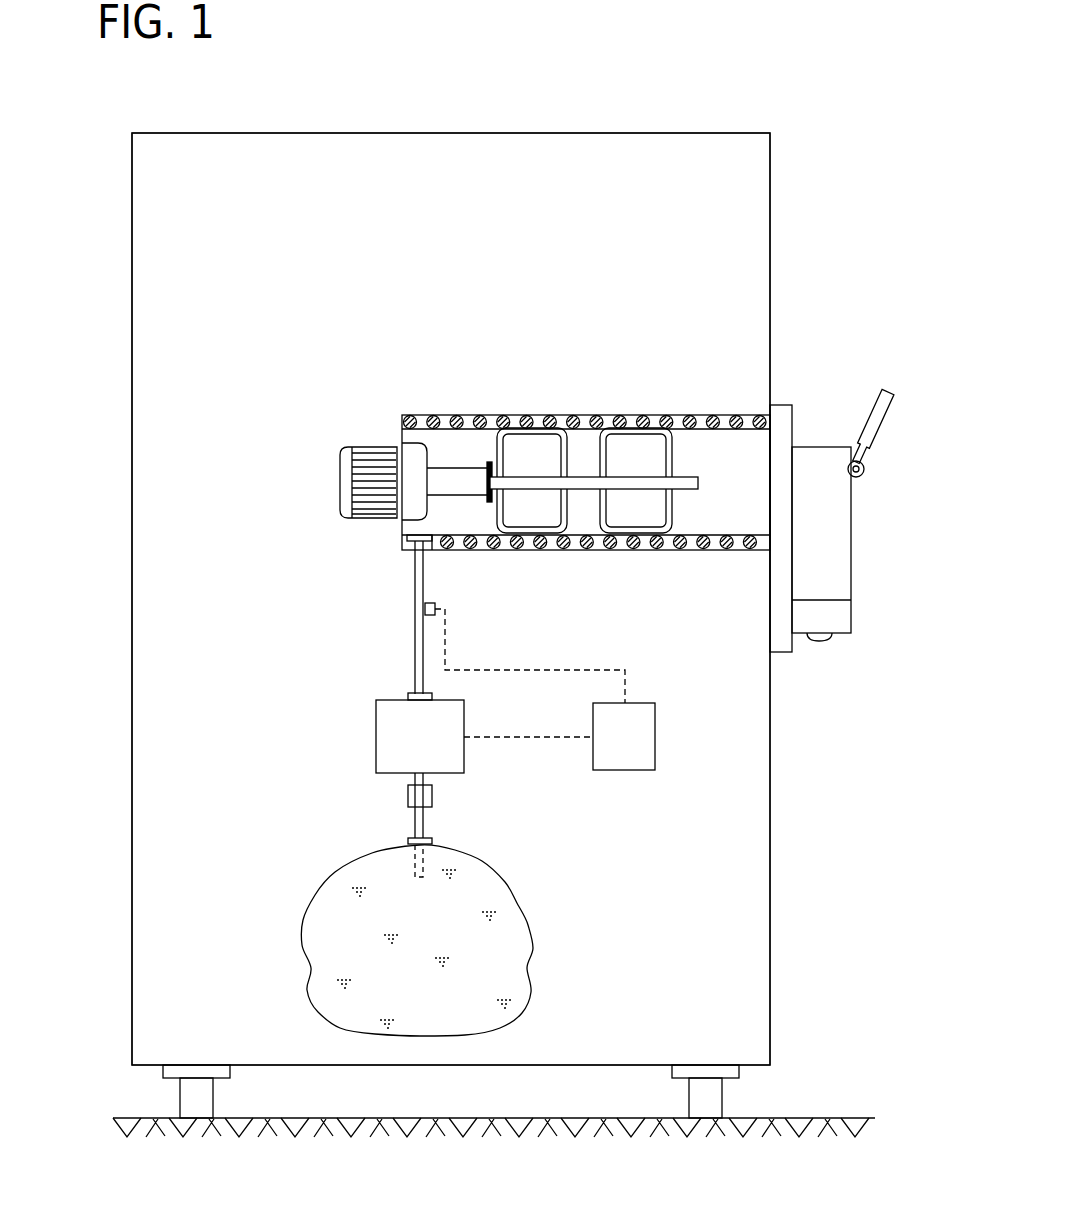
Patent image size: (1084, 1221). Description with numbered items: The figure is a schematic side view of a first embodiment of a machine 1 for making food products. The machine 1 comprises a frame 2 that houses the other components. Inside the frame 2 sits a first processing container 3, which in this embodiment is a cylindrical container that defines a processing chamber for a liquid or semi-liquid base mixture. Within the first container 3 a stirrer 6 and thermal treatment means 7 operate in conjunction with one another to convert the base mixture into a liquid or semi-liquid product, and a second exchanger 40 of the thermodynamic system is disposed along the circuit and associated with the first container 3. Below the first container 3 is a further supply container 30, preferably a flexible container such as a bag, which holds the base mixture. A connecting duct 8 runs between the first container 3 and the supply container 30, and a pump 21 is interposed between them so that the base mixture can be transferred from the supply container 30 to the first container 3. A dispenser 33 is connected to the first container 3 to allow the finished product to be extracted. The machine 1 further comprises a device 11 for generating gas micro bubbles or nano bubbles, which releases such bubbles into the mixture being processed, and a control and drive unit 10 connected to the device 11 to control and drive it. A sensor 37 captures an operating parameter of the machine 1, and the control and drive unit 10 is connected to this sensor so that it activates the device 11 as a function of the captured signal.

The machine for making food products 1 is at (600, 127).
The frame 2 is at (776, 197).
The first processing container 3 is at (754, 500).
The stirrer 6 is at (675, 457).
The thermal treatment means 7 is at (645, 552).
The connecting duct 8 is at (410, 825).
The control and drive unit 10 is at (639, 750).
The device for generating gas micro bubbles or nano bubbles 11 is at (470, 758).
The pump 21 is at (435, 803).
The supply container 30 is at (534, 953).
The dispenser 33 is at (825, 430).
The sensor 37 is at (438, 603).
The second exchanger 40 is at (497, 412).